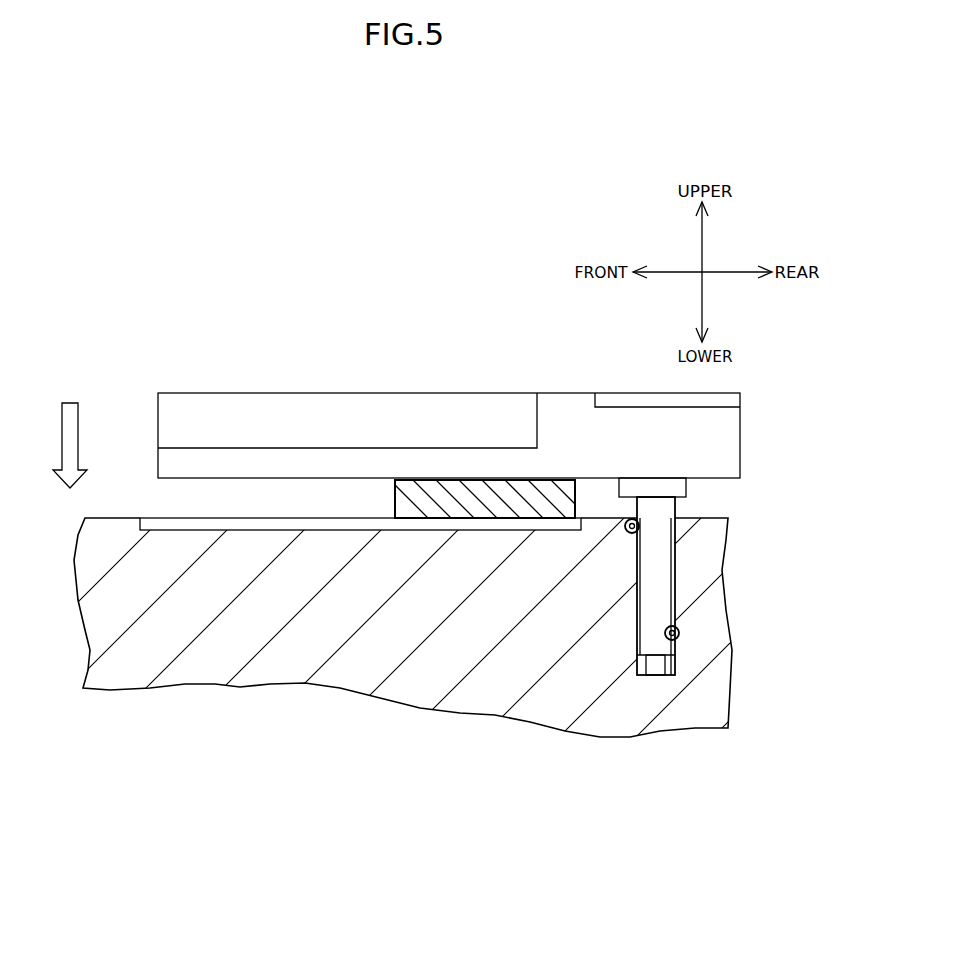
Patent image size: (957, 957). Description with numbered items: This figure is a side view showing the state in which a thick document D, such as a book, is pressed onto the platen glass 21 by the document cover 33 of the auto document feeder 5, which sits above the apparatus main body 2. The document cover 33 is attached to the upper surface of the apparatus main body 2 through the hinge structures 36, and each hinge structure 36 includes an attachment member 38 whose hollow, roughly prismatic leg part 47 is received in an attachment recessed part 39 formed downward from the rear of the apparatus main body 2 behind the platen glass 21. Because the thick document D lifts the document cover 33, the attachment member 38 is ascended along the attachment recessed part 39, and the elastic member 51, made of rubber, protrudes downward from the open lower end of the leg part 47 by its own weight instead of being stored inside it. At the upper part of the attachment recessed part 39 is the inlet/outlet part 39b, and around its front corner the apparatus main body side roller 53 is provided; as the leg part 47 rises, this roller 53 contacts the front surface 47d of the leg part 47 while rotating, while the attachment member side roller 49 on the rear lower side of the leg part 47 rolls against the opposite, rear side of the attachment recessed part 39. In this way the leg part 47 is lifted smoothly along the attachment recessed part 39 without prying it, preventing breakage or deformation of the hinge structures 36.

The apparatus main body 2 is at (445, 722).
The auto document feeder 5 is at (429, 382).
The platen glass 21 is at (163, 519).
The document cover 33 is at (233, 448).
The hinge structure 36 is at (703, 490).
The attachment member 38 is at (676, 572).
The attachment recessed part 39 is at (672, 606).
The inlet/outlet part 39b is at (642, 527).
The leg part 47 is at (648, 612).
The front surface 47d is at (636, 597).
The attachment member side roller 49 is at (680, 641).
The elastic member 51 is at (657, 668).
The apparatus main body side roller 53 is at (628, 532).
The thick document D is at (395, 496).